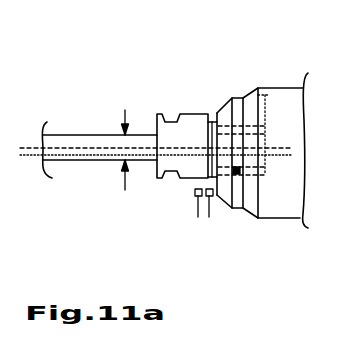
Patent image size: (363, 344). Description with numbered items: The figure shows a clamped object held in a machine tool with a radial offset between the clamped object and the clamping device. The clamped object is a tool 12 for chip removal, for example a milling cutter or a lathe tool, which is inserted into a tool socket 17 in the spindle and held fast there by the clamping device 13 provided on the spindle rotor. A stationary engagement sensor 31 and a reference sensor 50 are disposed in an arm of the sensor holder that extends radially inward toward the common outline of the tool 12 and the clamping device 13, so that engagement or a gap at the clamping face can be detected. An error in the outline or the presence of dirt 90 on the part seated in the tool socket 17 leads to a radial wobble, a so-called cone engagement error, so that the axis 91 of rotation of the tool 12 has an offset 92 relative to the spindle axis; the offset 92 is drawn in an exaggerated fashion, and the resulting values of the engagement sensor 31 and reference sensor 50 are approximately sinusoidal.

The tool 12 is at (183, 122).
The clamping device 13 is at (240, 104).
The tool socket 17 is at (256, 118).
The engagement sensor 31 is at (213, 196).
The reference sensor 50 is at (195, 191).
The dirt 90 is at (240, 172).
The axis of rotation 91 is at (99, 187).
The offset 92 is at (124, 116).